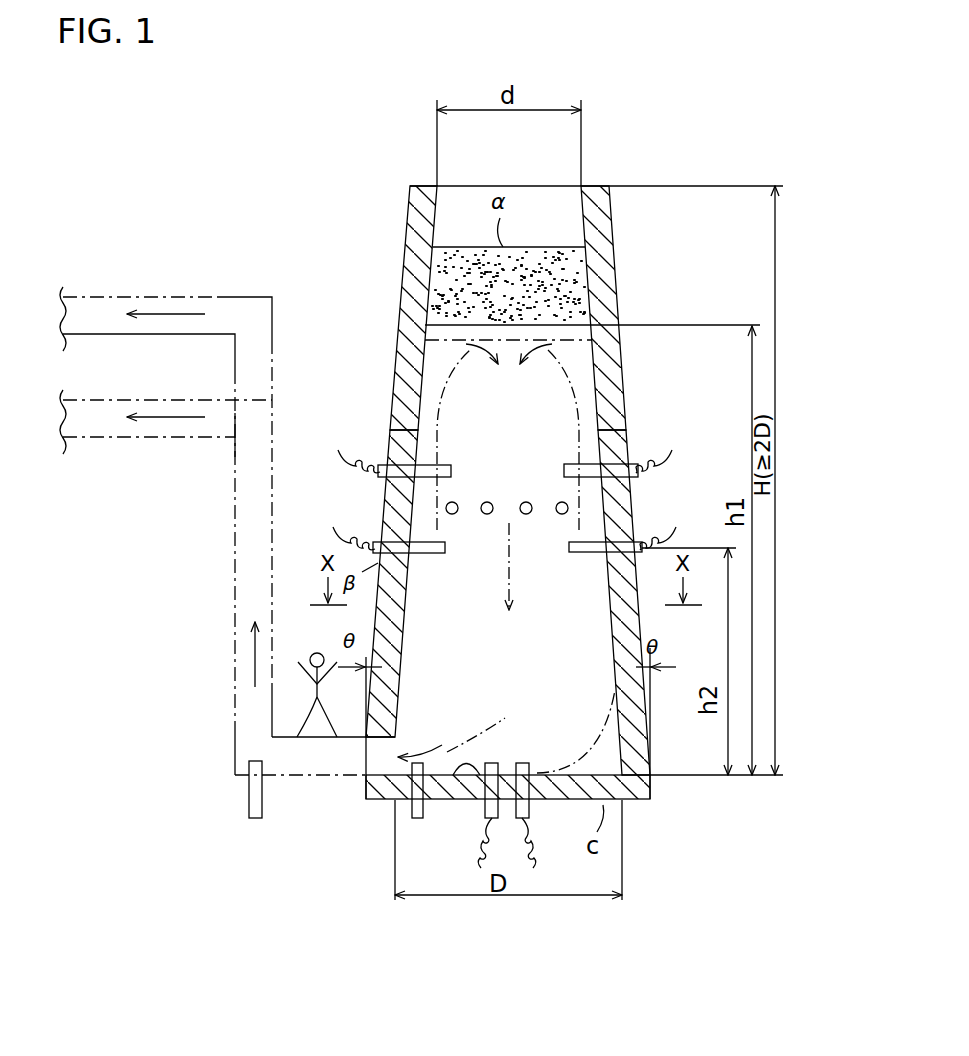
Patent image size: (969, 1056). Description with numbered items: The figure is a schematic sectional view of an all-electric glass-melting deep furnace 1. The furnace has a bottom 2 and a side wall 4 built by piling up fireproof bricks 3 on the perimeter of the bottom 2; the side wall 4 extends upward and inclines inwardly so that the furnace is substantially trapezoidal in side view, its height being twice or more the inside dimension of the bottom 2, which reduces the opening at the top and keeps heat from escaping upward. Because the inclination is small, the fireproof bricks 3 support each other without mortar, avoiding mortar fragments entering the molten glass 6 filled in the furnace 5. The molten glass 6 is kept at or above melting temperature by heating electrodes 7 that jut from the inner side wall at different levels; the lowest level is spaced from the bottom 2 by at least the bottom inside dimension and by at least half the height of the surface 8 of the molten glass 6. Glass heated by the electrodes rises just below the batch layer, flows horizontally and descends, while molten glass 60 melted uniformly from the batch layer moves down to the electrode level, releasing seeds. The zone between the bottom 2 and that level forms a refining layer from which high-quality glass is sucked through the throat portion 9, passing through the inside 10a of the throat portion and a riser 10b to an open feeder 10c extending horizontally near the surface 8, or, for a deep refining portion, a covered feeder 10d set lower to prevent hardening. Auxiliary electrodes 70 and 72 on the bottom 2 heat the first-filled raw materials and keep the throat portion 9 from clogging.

The all-electric glass-melting deep furnace 1 is at (372, 175).
The bottom 2 is at (450, 800).
The fireproof bricks 3 is at (608, 265).
The side wall 4 is at (398, 283).
The furnace 5 is at (622, 440).
The molten glass 6 is at (420, 400).
The heating electrodes 7 is at (448, 464).
The surface of the molten glass 8 is at (438, 310).
The throat portion 9 is at (420, 750).
The inside of the throat portion 10a is at (350, 755).
The riser 10b is at (238, 522).
The open feeder 10c is at (170, 297).
The covered feeder 10d is at (150, 438).
The molten glass 60 is at (625, 356).
The auxiliary electrodes 70 is at (497, 762).
The auxiliary electrodes 72 is at (412, 822).